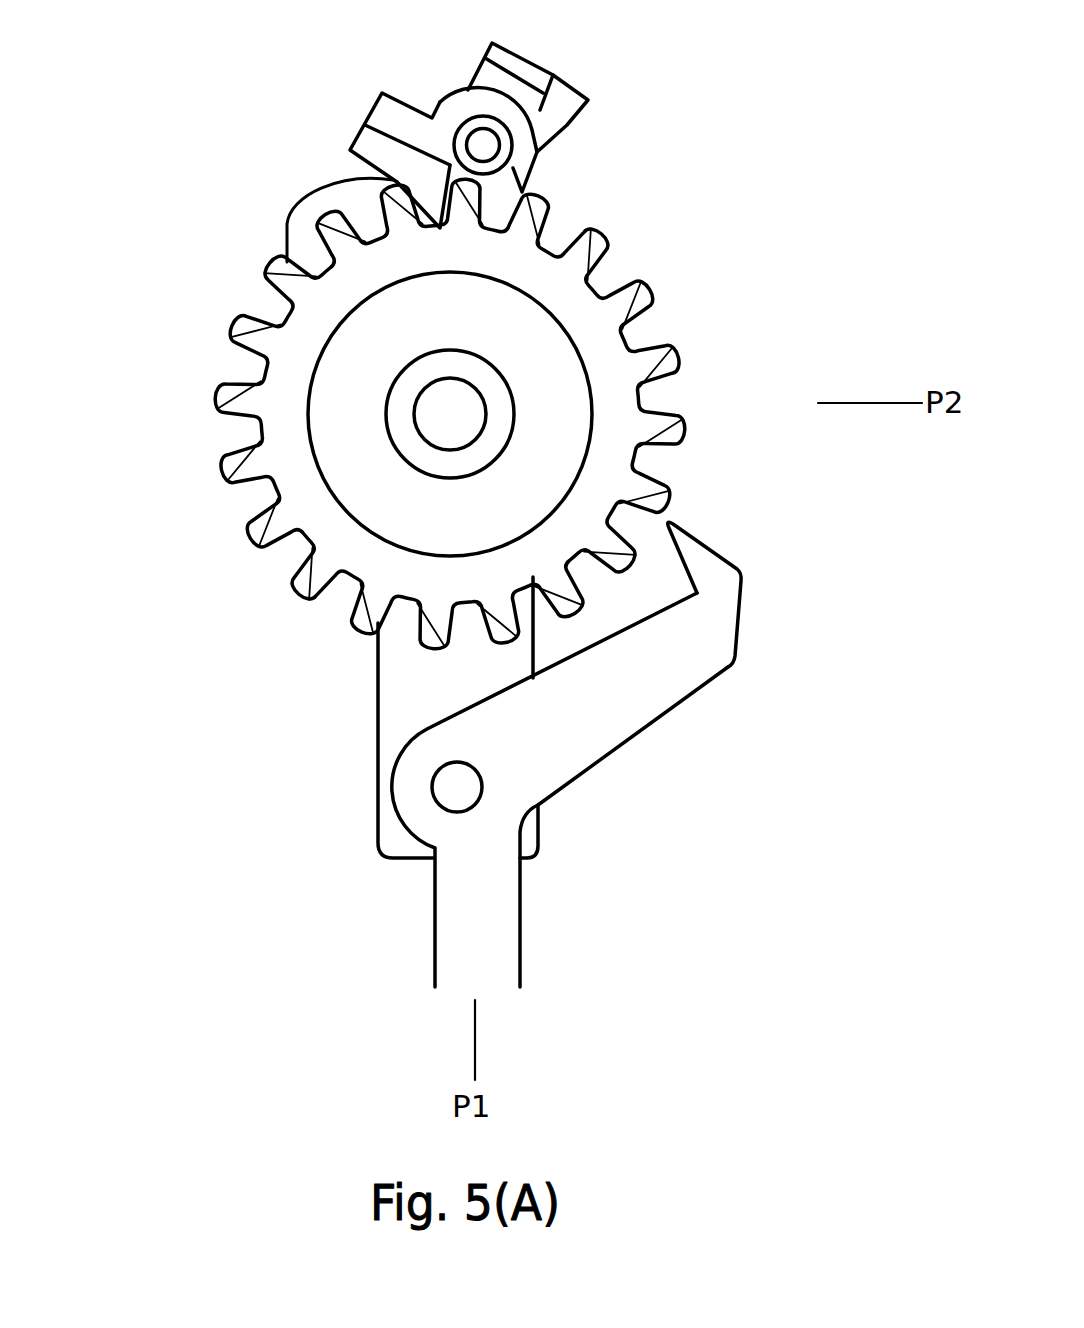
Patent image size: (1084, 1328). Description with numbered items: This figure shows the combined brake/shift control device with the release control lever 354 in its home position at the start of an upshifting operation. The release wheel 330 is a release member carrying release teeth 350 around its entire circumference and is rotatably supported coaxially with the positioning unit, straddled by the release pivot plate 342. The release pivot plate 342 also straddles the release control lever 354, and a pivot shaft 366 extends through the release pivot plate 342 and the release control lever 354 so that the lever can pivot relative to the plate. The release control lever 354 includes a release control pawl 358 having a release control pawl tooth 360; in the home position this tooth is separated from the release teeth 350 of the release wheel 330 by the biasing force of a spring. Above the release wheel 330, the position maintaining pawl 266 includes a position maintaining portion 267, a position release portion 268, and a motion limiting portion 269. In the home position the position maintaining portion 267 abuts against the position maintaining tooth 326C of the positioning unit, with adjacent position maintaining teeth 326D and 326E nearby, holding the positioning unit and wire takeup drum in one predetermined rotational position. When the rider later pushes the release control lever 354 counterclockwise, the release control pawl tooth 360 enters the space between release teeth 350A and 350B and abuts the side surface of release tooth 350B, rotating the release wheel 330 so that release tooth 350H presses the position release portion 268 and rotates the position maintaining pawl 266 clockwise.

The position maintaining pawl 266 is at (457, 127).
The position maintaining portion 267 is at (407, 175).
The position release portion 268 is at (343, 125).
The motion limiting portion 269 is at (539, 155).
The position maintaining tooth 326C is at (412, 214).
The gear tooth 326D is at (527, 195).
The gear tooth 326E is at (547, 232).
The release wheel 330 is at (347, 415).
The release teeth 350 is at (438, 721).
The release tooth 350A is at (626, 581).
The release tooth 350B is at (668, 486).
The release tooth 350H is at (457, 213).
The release pivot plate 342 is at (398, 670).
The release control lever 354 is at (542, 754).
The release control pawl 358 is at (707, 657).
The release control pawl tooth 360 is at (718, 553).
The pivot shaft 366 is at (450, 788).